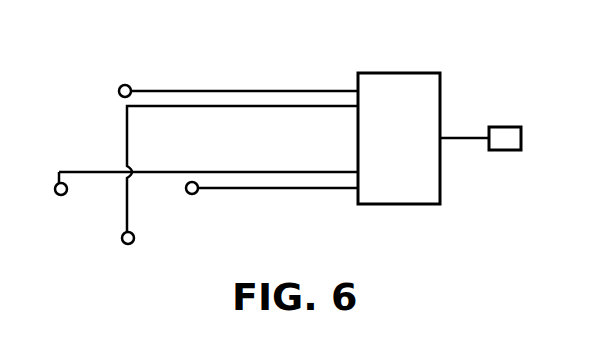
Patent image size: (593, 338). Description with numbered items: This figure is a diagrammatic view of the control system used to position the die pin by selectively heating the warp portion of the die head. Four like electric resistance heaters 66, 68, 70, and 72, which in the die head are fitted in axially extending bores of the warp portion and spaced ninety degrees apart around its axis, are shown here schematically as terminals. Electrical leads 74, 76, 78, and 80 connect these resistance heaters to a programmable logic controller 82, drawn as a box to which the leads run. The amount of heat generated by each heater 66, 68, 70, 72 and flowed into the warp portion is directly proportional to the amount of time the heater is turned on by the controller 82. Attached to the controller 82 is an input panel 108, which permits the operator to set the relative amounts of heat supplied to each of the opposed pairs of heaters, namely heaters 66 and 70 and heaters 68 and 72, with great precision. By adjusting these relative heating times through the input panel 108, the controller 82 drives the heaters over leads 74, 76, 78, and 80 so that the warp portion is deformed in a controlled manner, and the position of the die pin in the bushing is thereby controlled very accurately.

The electric resistance heater 66 is at (128, 85).
The electric resistance heater 68 is at (195, 196).
The electric resistance heater 70 is at (131, 244).
The electric resistance heater 72 is at (58, 196).
The electrical lead 74 is at (240, 89).
The electrical lead 76 is at (276, 191).
The electrical lead 78 is at (129, 205).
The electrical lead 80 is at (238, 170).
The programmable logic controller 82 is at (399, 73).
The input panel 108 is at (507, 127).